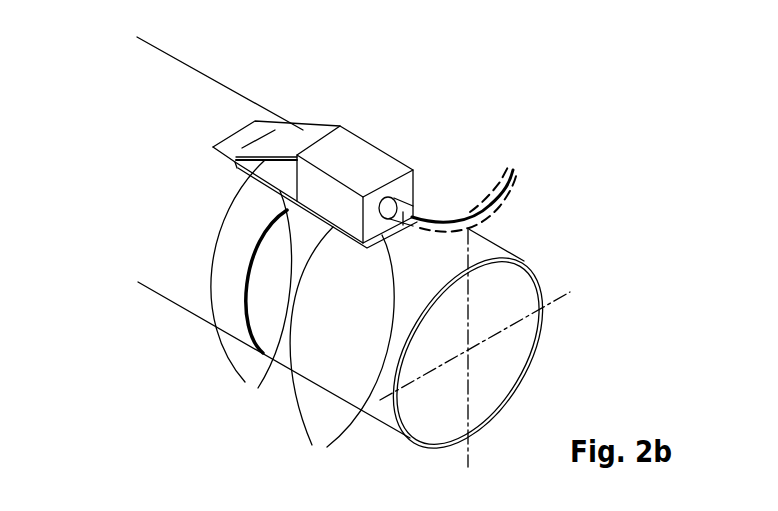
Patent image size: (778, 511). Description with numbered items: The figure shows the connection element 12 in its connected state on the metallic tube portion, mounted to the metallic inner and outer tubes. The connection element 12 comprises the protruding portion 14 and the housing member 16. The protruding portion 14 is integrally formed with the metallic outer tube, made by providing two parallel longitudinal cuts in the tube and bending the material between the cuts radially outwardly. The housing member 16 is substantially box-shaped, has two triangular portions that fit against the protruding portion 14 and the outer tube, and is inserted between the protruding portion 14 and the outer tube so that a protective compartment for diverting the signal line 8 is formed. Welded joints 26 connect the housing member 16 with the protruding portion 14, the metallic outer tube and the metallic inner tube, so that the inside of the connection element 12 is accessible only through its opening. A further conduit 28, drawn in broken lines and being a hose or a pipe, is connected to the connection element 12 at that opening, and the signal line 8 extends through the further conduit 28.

The signal line 8 is at (510, 172).
The connection element 12 is at (337, 125).
The protruding portion 14 is at (288, 142).
The housing member 16 is at (370, 147).
The welded joints 26 is at (312, 133).
The further conduit 28 is at (487, 195).